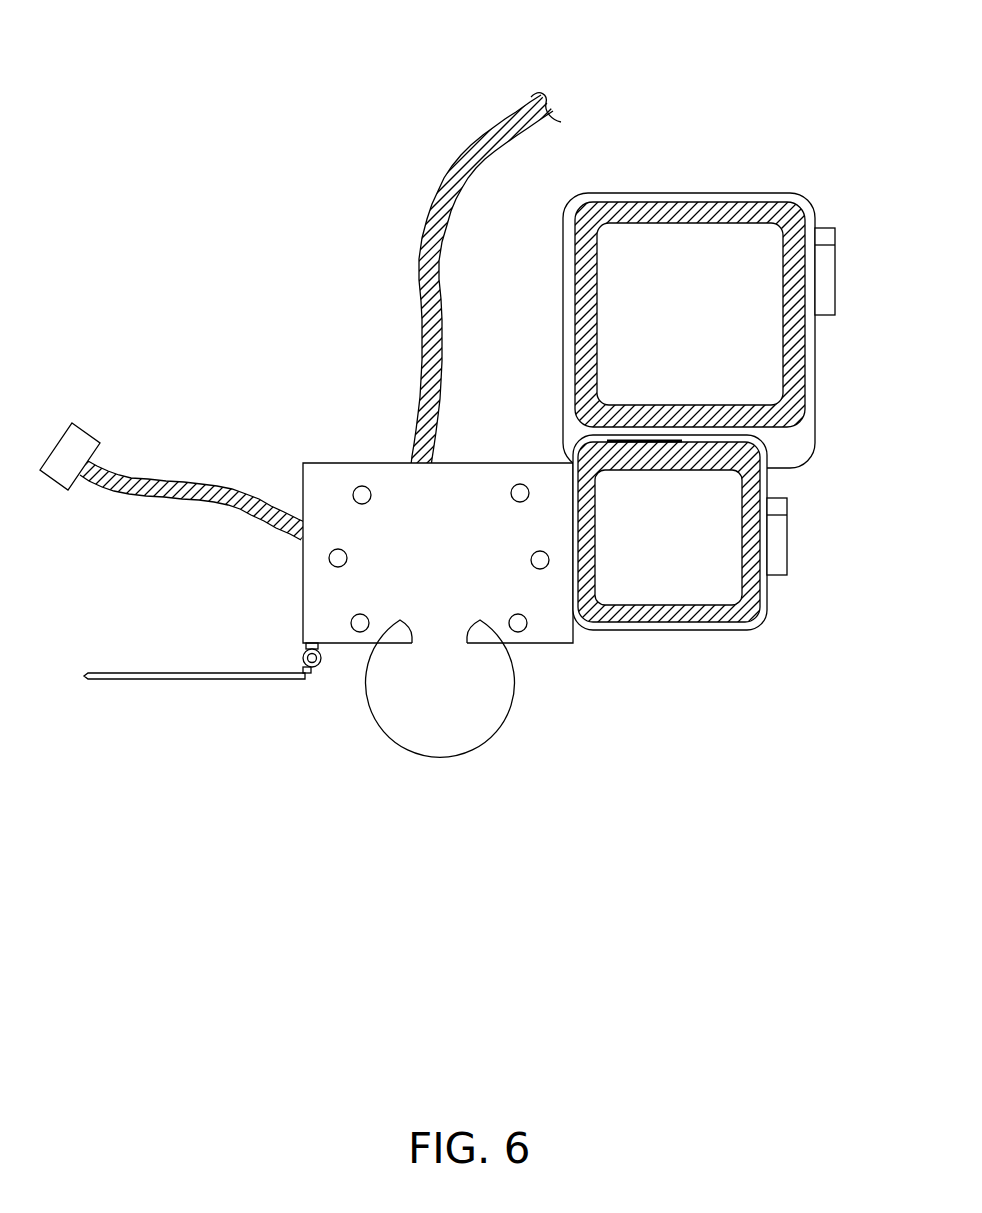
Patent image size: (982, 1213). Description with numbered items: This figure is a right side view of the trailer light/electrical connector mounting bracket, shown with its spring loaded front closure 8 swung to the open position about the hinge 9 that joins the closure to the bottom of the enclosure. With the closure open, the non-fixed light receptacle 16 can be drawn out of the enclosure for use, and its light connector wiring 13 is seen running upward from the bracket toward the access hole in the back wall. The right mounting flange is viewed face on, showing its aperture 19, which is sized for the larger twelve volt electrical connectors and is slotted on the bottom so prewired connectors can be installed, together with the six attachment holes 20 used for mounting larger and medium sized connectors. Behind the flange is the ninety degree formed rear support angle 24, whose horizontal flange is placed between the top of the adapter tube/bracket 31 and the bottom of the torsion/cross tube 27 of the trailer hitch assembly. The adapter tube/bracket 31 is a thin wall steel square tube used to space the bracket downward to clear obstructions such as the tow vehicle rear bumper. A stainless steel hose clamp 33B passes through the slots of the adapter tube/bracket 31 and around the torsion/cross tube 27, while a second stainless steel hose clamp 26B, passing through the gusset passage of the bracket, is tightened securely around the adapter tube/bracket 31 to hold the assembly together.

The front closure 8 is at (160, 682).
The hinge 9 is at (323, 665).
The light connector wiring 13 is at (552, 100).
The light receptacle 16 is at (55, 445).
The aperture 19 is at (373, 533).
The attachment holes 20 is at (360, 486).
The rear support angle 24 is at (618, 438).
The stainless steel hose clamp 26B is at (780, 583).
The torsion/cross tube 27 is at (683, 207).
The adapter tube/bracket 31 is at (668, 628).
The stainless steel hose clamp 33B is at (827, 227).